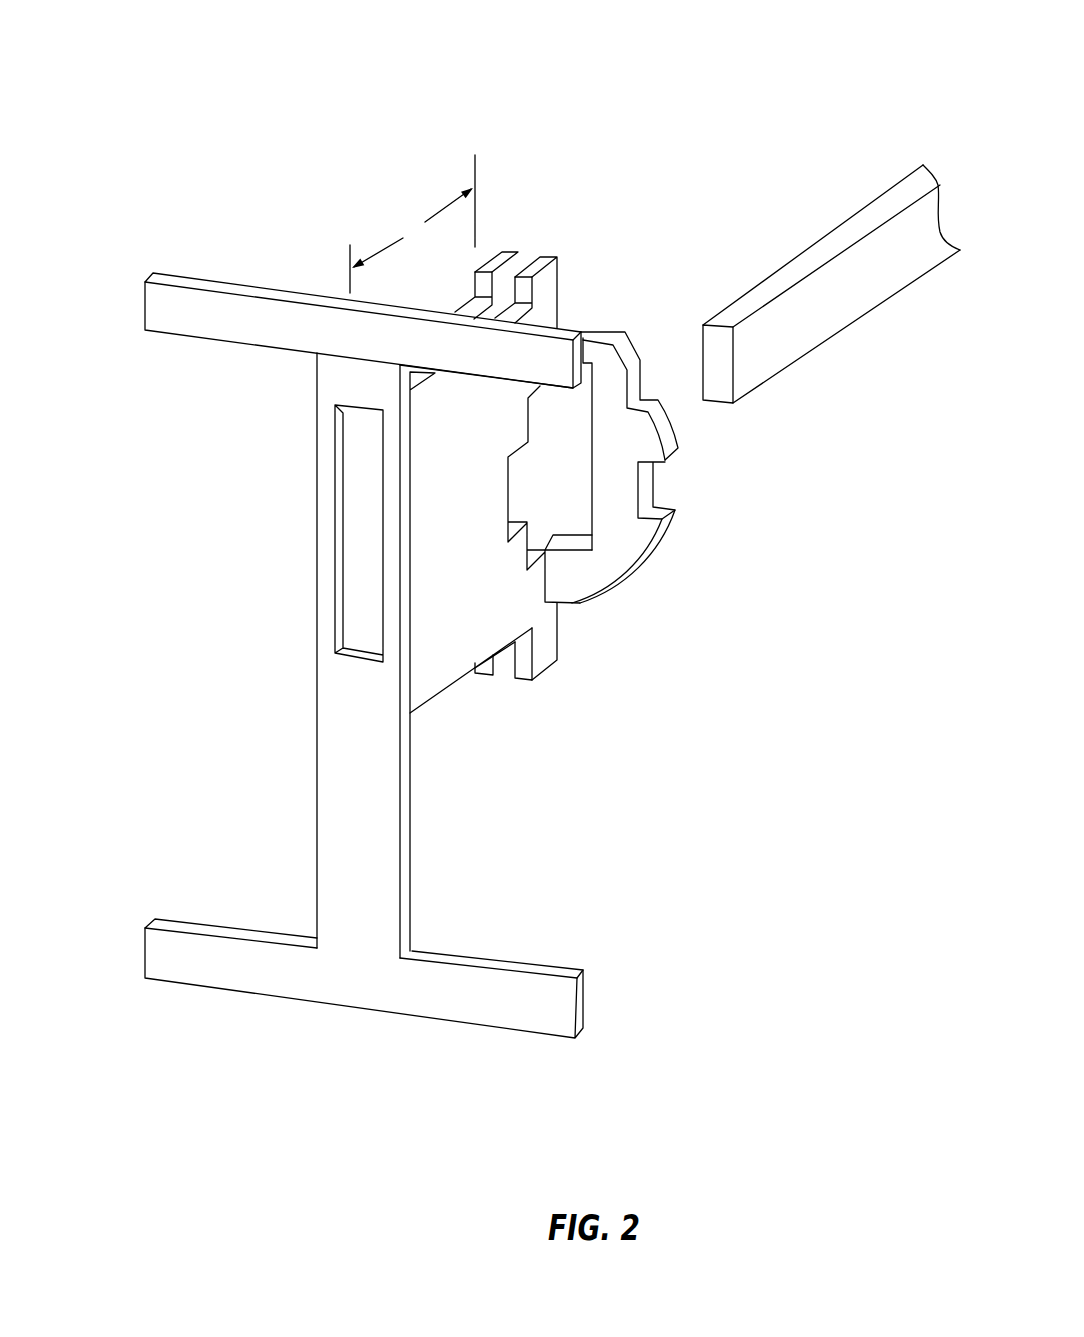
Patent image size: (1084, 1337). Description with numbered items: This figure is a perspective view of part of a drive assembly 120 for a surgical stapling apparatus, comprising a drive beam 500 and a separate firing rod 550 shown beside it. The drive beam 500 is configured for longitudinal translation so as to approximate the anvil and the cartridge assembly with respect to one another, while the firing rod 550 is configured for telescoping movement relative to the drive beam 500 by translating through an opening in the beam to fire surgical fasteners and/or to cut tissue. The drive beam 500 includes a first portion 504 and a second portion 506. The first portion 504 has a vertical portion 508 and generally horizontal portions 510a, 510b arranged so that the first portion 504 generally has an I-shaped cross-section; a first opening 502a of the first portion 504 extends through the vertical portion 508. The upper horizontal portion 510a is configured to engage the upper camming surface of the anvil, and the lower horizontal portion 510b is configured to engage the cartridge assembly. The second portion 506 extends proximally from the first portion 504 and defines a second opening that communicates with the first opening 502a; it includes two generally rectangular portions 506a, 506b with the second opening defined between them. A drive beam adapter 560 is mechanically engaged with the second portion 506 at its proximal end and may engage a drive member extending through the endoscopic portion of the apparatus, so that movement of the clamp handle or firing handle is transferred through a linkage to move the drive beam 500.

The drive assembly 120 is at (392, 55).
The drive beam 500 is at (558, 155).
The first opening 502a is at (357, 549).
The first portion 504 is at (332, 738).
The second portion 506 is at (442, 668).
The rectangular portion 506a is at (547, 287).
The rectangular portion 506b is at (503, 257).
The vertical portion 508 is at (315, 402).
The horizontal portion 510a is at (163, 308).
The horizontal portion 510b is at (165, 950).
The firing rod 550 is at (822, 213).
The drive beam adapter 560 is at (672, 530).